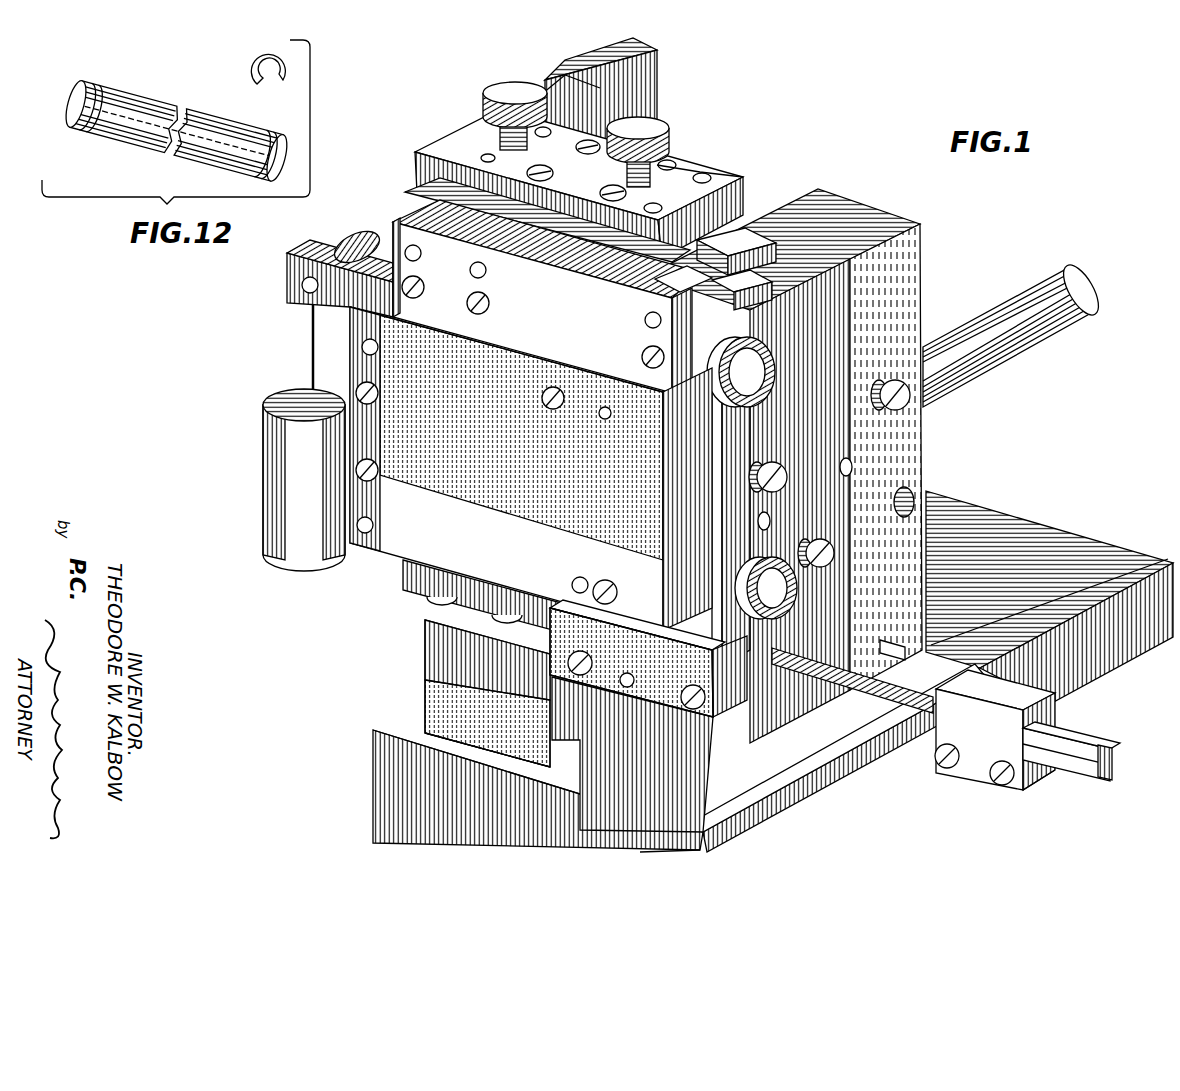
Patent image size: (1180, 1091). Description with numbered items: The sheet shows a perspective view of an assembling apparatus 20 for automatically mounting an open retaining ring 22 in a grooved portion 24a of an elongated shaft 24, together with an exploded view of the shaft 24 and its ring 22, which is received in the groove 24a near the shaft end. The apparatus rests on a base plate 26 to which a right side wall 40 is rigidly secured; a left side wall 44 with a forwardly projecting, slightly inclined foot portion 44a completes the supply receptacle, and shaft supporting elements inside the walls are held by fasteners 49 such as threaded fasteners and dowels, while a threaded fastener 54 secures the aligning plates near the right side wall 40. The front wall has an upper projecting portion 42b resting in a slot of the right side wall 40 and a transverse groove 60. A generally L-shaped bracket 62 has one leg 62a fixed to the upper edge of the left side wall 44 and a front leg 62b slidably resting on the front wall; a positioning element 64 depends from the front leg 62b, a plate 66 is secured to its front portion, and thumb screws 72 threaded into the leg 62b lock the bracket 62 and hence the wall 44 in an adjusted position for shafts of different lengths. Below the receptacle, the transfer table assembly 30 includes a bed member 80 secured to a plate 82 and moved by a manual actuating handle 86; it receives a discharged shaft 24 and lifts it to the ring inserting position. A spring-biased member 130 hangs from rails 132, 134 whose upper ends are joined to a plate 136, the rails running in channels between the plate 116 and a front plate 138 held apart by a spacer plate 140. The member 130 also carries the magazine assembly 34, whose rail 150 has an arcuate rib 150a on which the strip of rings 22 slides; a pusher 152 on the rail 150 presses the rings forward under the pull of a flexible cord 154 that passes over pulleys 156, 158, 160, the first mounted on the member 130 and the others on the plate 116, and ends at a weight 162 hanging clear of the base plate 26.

In FIG. 1, the assembling apparatus 20 is at (825, 113).
In FIG. 12, the open retaining ring 22 is at (266, 50).
In FIG. 1, the open retaining ring 22 is at (848, 656).
In FIG. 12, the shaft 24 is at (176, 119).
In FIG. 12, the grooved portion 24a is at (90, 86).
In FIG. 1, the base plate 26 is at (1020, 520).
In FIG. 1, the transfer table assembly 30 is at (448, 658).
In FIG. 1, the magazine assembly 34 is at (1125, 706).
In FIG. 1, the right side wall 40 is at (870, 205).
In FIG. 1, the projecting portion 42b is at (772, 228).
In FIG. 1, the left side wall 44 is at (655, 106).
In FIG. 1, the foot portion 44a is at (412, 604).
In FIG. 1, the fasteners 49 is at (912, 403).
In FIG. 1, the threaded fastener 54 is at (790, 472).
In FIG. 1, the groove 60 is at (768, 240).
In FIG. 1, the L-shaped bracket 62 is at (598, 147).
In FIG. 1, the bracket leg 62a is at (566, 75).
In FIG. 1, the front leg 62b is at (700, 168).
In FIG. 1, the positioning element 64 is at (745, 198).
In FIG. 1, the plate 66 is at (640, 254).
In FIG. 1, the thumb screws 72 is at (515, 82).
In FIG. 1, the transfer table 80 is at (432, 641).
In FIG. 1, the plate 82 is at (437, 713).
In FIG. 1, the manual actuating handle 86 is at (1063, 322).
In FIG. 1, the plate 116 is at (290, 288).
In FIG. 1, the member 130 is at (405, 576).
In FIG. 1, the rail 132 is at (415, 195).
In FIG. 1, the rail 134 is at (658, 290).
In FIG. 1, the plate 136 is at (408, 215).
In FIG. 1, the front plate 138 is at (494, 396).
In FIG. 1, the spacer plate 140 is at (350, 298).
In FIG. 1, the rail 150 is at (1098, 766).
In FIG. 1, the arcuate rib 150a is at (1102, 742).
In FIG. 1, the pusher 152 is at (1060, 707).
In FIG. 1, the flexible cord 154 is at (890, 641).
In FIG. 1, the pulley 156 is at (800, 590).
In FIG. 1, the pulley 158 is at (768, 345).
In FIG. 1, the pulley 160 is at (363, 215).
In FIG. 1, the weight 162 is at (265, 443).